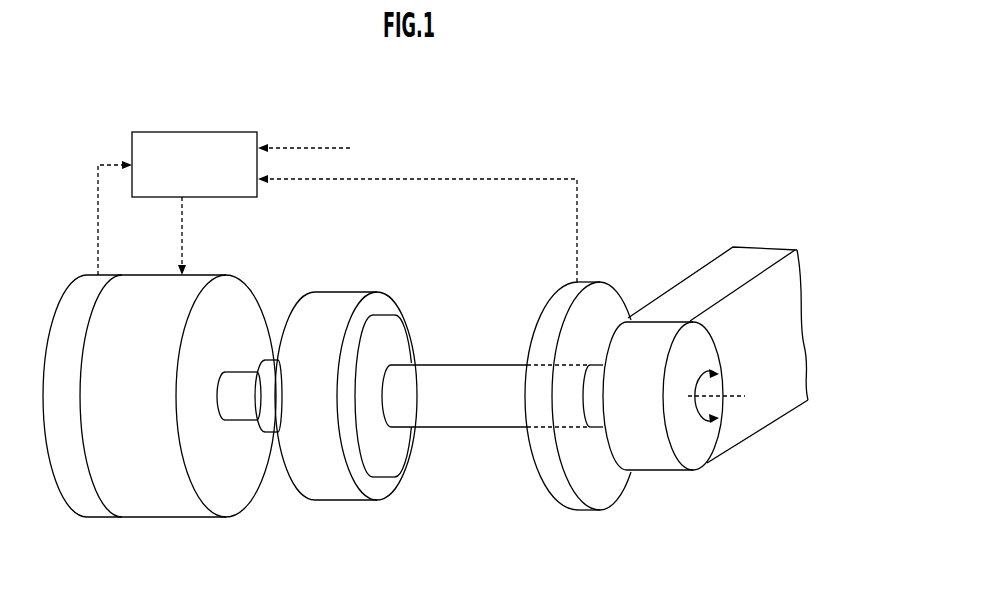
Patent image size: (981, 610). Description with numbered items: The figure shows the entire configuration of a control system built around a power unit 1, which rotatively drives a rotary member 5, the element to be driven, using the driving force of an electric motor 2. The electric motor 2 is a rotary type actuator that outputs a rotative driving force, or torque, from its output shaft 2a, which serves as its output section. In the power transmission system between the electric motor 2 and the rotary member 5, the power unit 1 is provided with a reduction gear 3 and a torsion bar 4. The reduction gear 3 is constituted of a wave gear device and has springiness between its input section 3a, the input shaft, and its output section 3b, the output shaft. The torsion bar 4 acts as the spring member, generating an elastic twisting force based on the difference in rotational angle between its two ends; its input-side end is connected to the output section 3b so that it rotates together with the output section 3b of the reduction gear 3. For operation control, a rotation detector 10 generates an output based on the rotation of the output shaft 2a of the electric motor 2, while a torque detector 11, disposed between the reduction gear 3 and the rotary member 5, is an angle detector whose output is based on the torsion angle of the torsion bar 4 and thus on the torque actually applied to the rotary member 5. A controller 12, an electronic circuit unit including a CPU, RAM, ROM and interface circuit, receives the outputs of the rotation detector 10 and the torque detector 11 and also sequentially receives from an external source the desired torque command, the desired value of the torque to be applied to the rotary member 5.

The power unit 1 is at (459, 257).
The electric motor 2 is at (159, 420).
The output shaft 2a is at (238, 408).
The reduction gear 3 is at (325, 500).
The input section 3a is at (270, 415).
The output section 3b is at (375, 480).
The torsion bar 4 is at (508, 430).
The rotary member 5 is at (722, 457).
The rotation detector 10 is at (90, 503).
The torque detector 11 is at (608, 283).
The controller 12 is at (190, 132).